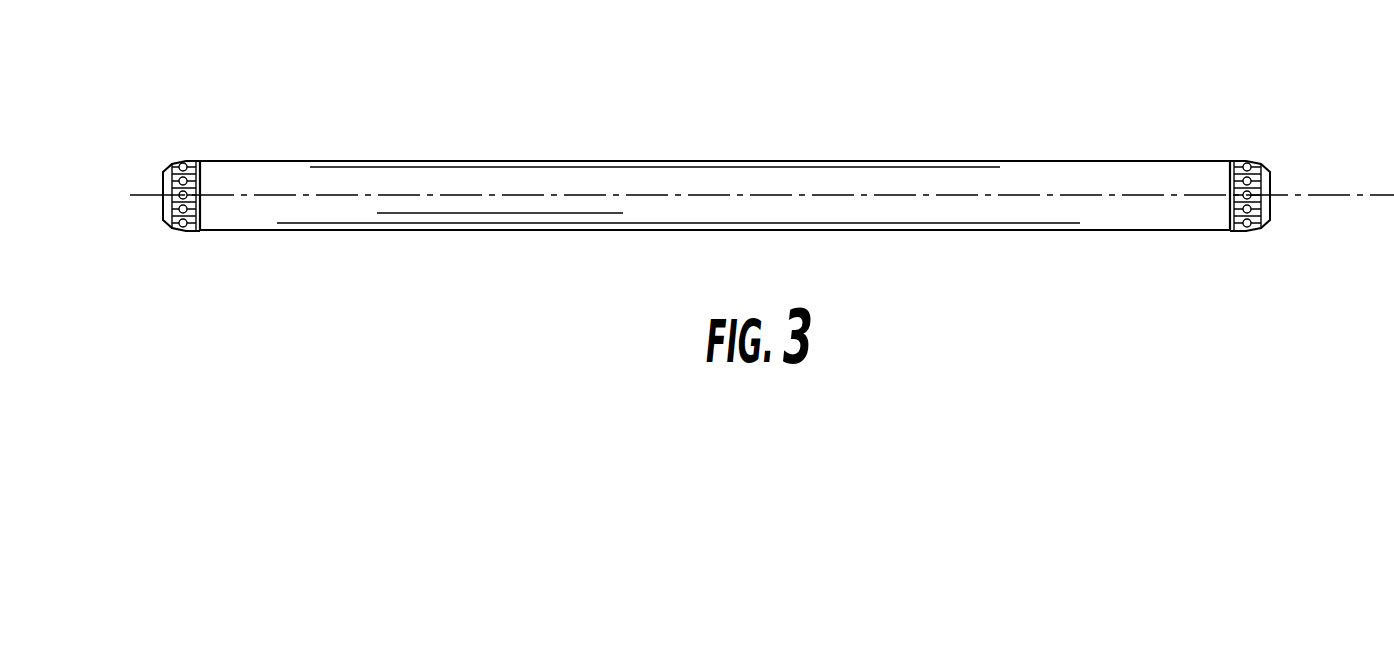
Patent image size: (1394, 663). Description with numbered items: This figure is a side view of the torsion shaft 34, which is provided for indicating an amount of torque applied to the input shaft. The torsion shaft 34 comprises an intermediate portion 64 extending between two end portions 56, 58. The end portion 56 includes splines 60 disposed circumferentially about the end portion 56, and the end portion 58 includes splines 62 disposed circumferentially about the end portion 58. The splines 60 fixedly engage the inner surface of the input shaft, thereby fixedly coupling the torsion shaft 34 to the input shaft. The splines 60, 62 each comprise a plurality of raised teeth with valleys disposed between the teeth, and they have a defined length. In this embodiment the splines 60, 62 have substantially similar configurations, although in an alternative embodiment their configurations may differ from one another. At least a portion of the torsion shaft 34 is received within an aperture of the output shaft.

The torsion shaft 34 is at (940, 161).
The end portion 56 is at (1272, 188).
The end portion 58 is at (160, 208).
The splines 60 is at (1248, 163).
The splines 62 is at (193, 160).
The intermediate portion 64 is at (545, 160).